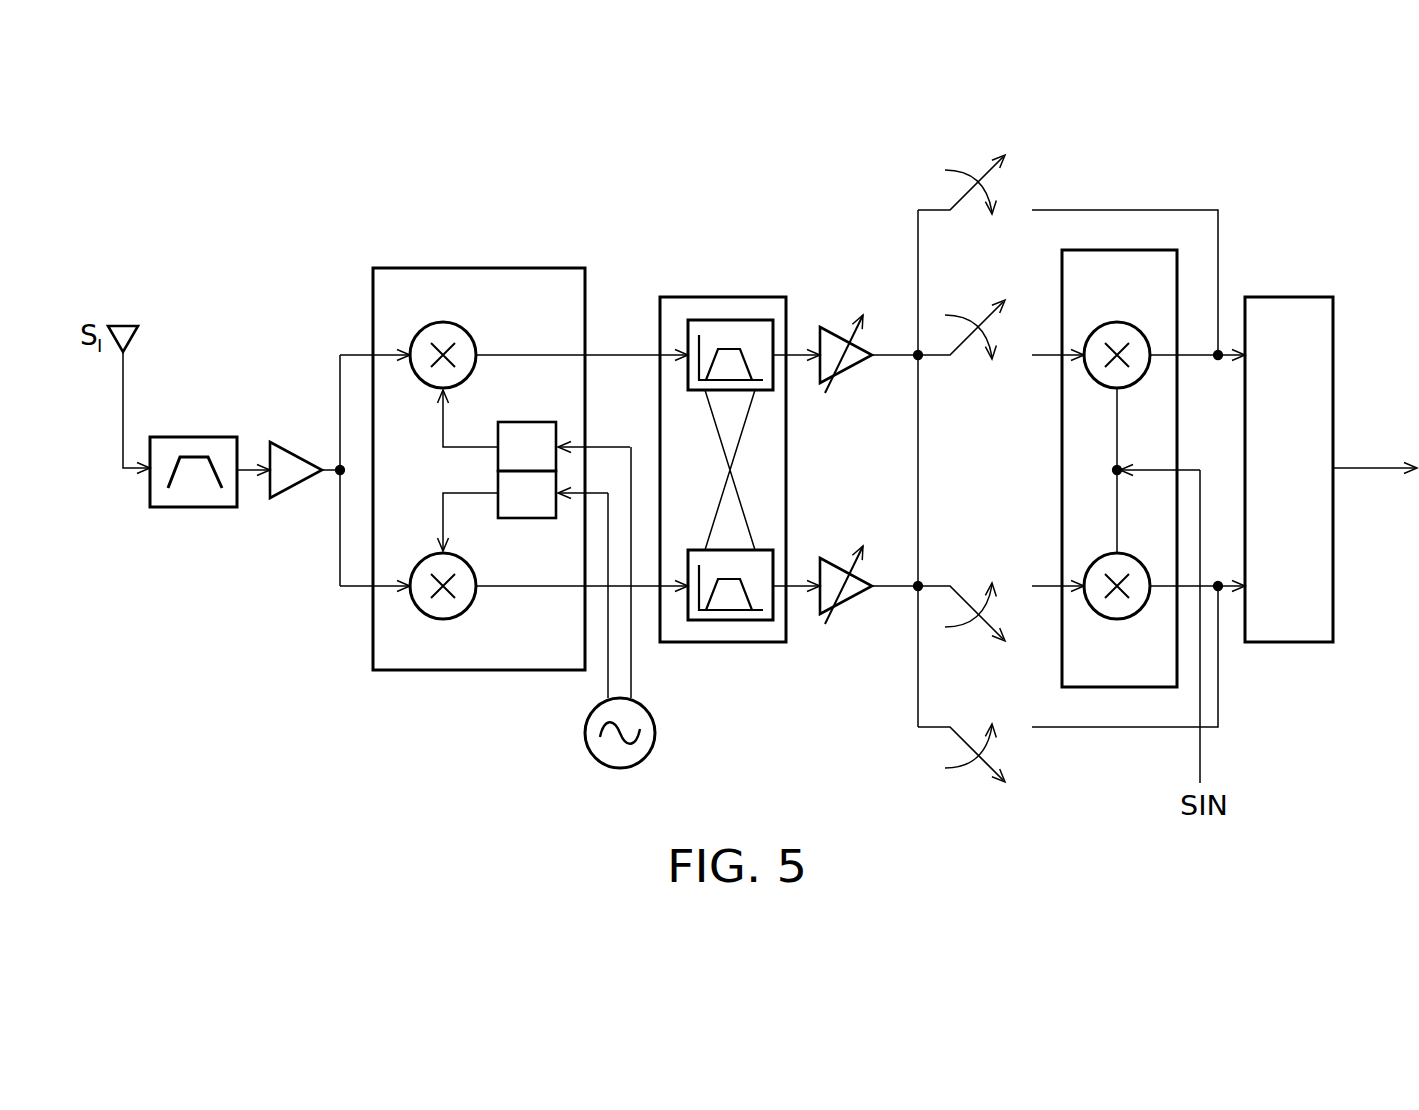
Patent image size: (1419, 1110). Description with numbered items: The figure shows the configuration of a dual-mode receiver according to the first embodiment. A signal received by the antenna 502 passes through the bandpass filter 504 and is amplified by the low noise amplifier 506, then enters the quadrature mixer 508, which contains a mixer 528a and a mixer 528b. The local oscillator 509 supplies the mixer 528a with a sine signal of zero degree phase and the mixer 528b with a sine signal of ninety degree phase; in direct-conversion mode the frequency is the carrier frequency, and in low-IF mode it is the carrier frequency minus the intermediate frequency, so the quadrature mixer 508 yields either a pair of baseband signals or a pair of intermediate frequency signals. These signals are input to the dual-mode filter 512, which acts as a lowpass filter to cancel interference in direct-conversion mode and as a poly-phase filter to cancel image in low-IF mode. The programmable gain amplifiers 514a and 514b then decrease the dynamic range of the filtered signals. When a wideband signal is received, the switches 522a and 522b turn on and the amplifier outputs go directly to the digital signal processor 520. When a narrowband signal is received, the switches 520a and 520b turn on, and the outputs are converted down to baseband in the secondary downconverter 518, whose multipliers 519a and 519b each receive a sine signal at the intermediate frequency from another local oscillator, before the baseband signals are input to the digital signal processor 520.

The antenna 502 is at (123, 322).
The bandpass filter 504 is at (195, 437).
The low noise amplifier 506 is at (277, 437).
The quadrature mixer 508 is at (501, 449).
The local oscillator 509 is at (618, 768).
The dual-mode filter 512 is at (722, 297).
The programmable gain amplifier 514a is at (843, 332).
The programmable gain amplifier 514b is at (843, 562).
The secondary downconverter 518 is at (1153, 499).
The multiplier 519a is at (1117, 322).
The multiplier 519b is at (1117, 619).
The digital signal processor 520 is at (1262, 297).
The switch 520a is at (1001, 320).
The switch 520b is at (1001, 621).
The switch 522a is at (1068, 244).
The switch 522b is at (1068, 697).
The mixer 528a is at (445, 322).
The mixer 528b is at (445, 619).